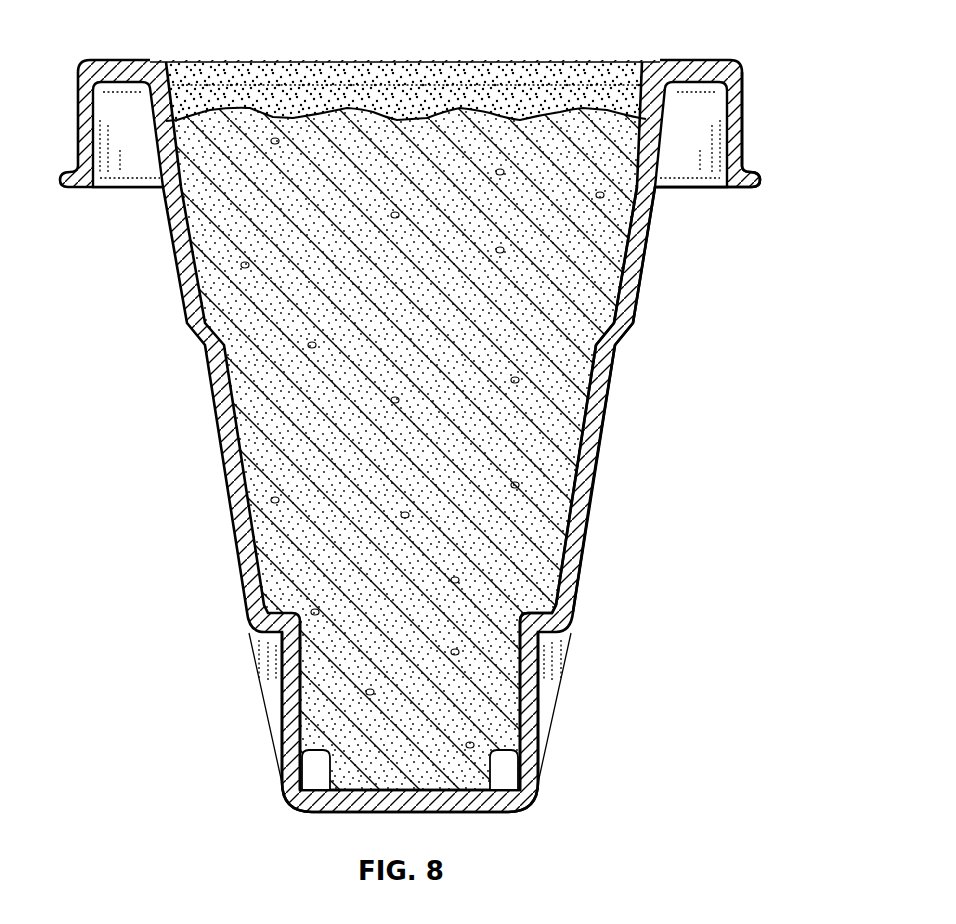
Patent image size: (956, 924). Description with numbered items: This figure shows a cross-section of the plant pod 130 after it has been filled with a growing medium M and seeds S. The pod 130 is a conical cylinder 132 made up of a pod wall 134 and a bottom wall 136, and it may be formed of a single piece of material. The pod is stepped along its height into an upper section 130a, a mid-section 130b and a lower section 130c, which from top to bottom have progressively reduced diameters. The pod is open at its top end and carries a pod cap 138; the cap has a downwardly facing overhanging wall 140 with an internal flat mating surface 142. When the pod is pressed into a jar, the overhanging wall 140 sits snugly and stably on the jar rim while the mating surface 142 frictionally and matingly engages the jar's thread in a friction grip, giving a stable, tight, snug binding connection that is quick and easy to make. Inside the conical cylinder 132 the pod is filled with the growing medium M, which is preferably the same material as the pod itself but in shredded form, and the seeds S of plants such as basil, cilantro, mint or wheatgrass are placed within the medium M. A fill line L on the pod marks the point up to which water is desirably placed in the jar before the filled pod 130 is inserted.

The pod cap 138 is at (742, 101).
The internal flat mating surface 142 is at (716, 112).
The overhanging wall 140 is at (742, 138).
The upper section 130a is at (640, 244).
The seeds S is at (503, 251).
The fill line L is at (631, 328).
The plant pod 130 is at (612, 385).
The growing medium M is at (547, 392).
The pod wall 134 is at (591, 483).
The mid-section 130b is at (584, 522).
The conical cylinder 132 is at (578, 565).
The lower section 130c is at (536, 700).
The bottom wall 136 is at (476, 812).